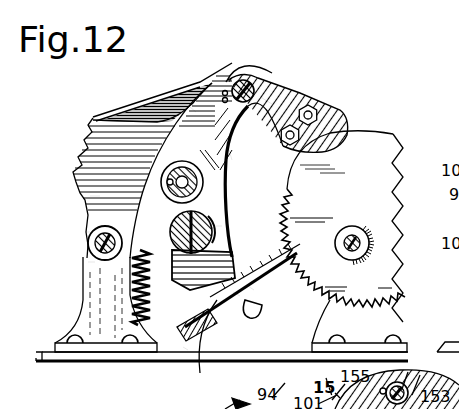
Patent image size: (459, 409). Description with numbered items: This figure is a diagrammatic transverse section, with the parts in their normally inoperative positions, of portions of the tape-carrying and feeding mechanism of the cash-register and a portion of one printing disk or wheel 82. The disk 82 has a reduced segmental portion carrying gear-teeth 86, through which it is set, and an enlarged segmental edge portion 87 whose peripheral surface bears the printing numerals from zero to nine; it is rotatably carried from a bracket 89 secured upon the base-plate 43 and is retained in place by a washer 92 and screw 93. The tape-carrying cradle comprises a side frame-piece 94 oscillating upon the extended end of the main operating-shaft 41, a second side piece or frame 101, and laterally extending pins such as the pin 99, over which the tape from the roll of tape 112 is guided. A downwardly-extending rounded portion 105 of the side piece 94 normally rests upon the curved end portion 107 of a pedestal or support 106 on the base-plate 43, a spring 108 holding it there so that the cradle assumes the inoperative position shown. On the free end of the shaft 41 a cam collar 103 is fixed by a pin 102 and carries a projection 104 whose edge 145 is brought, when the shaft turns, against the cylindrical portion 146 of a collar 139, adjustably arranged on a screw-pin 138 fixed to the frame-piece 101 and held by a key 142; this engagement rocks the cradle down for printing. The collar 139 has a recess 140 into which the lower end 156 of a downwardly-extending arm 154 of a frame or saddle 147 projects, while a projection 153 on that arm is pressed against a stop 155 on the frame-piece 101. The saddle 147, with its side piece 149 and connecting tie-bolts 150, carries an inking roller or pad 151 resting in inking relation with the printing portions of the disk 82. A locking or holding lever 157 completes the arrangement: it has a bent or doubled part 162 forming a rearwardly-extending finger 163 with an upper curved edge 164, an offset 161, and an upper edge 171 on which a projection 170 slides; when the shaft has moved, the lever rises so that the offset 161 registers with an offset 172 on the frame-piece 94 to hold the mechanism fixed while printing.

The main operating-shaft 41 is at (222, 212).
The base-plate 43 is at (117, 357).
The printing disk or wheel 82 is at (342, 248).
The gear-teeth 86 is at (368, 302).
The enlarged segmental edge portion 87 is at (387, 137).
The bracket 89 is at (373, 328).
The washer 92 is at (347, 213).
The screw 93 is at (358, 232).
The side frame-piece 94 is at (80, 155).
The laterally-extending pin 99 is at (90, 247).
The second side piece or frame 101 is at (205, 100).
The pin 102 is at (215, 228).
The cam collar 103 is at (213, 238).
The projection 104 is at (213, 283).
The downwardly-extending rounded portion 105 is at (87, 232).
The pedestal or support 106 is at (92, 285).
The curved end portion 107 is at (90, 262).
The spring 108 is at (134, 300).
The roll of tape 112 is at (138, 110).
The screw-pin 138 is at (170, 177).
The collar 139 is at (97, 198).
The recess 140 is at (225, 180).
The key 142 is at (163, 180).
The edge 145 is at (183, 258).
The cylindrical portion 146 is at (172, 200).
The frame or saddle 147 is at (270, 88).
The side piece 149 is at (268, 100).
The tie-bolt 150 is at (323, 112).
The inking roller or pad 151 is at (307, 143).
The projection 153 is at (190, 107).
The downwardly-extending arm 154 is at (230, 150).
The stop 155 is at (231, 68).
The lower end 156 is at (205, 165).
The locking or holding lever 157 is at (280, 278).
The offset 161 is at (220, 347).
The bent or doubled part 162 is at (183, 347).
The rearwardly-extending finger 163 is at (240, 312).
The upper curved edge 164 is at (233, 292).
The projection 170 is at (212, 293).
The upper edge 171 is at (250, 287).
The offset 172 is at (230, 272).